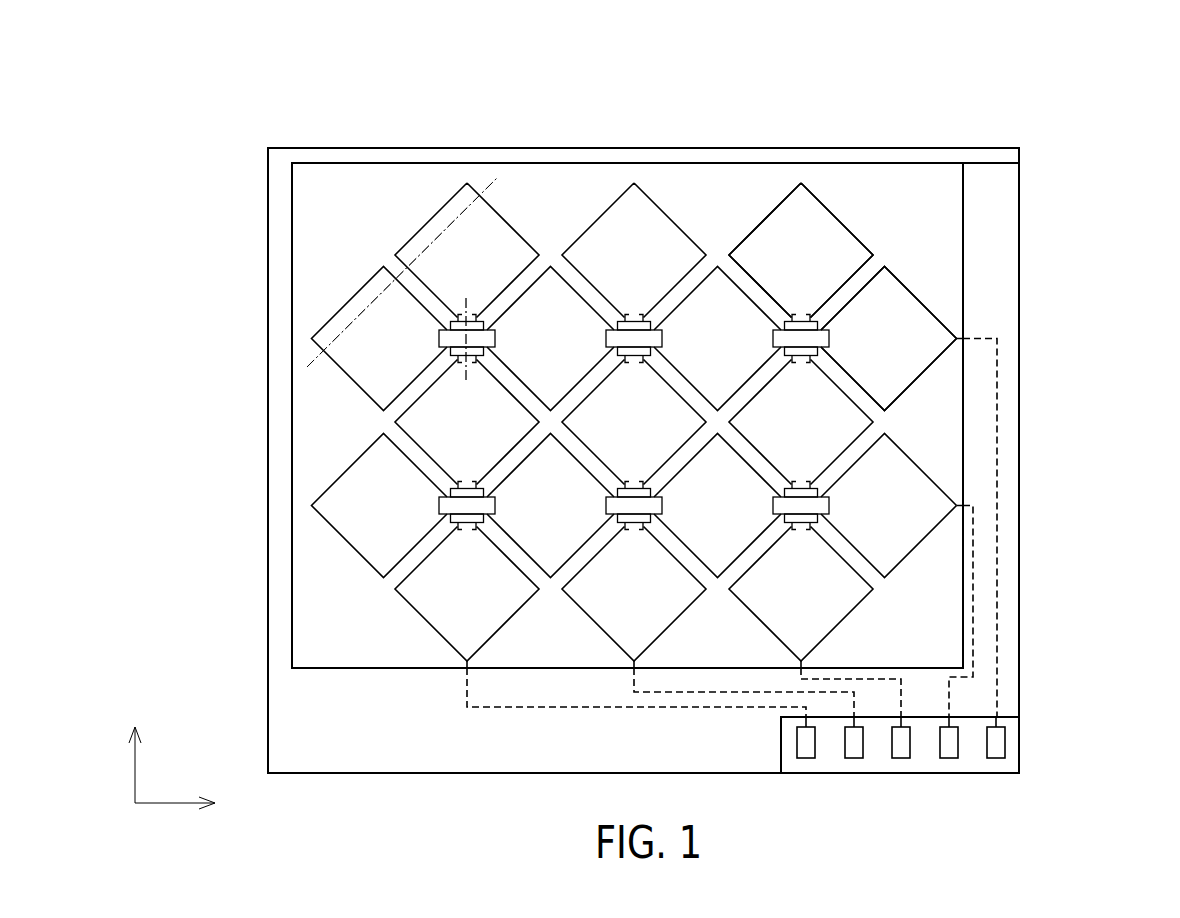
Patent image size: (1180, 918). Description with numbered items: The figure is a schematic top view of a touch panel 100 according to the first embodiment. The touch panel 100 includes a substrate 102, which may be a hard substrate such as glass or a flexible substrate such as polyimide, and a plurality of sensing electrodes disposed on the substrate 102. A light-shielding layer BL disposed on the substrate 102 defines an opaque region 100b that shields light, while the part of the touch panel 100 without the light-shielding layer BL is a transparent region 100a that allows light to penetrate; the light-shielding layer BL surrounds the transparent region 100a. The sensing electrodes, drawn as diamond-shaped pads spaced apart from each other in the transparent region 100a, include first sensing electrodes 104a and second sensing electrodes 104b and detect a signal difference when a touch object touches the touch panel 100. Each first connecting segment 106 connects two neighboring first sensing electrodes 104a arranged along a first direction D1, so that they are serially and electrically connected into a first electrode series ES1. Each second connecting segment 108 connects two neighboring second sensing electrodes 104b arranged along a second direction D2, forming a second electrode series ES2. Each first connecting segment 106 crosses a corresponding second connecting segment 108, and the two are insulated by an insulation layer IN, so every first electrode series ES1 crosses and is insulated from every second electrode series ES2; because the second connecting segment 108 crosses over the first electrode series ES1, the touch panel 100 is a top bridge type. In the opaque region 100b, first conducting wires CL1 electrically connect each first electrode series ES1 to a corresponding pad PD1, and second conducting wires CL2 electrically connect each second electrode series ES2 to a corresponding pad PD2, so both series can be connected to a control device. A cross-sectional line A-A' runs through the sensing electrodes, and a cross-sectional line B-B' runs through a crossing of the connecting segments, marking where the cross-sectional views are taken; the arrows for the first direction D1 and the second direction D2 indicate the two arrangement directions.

The touch panel 100 is at (1040, 98).
The transparent region 100a is at (944, 225).
The opaque region 100b is at (1004, 252).
The substrate 102 is at (352, 651).
The first sensing electrode 104a is at (837, 245).
The second sensing electrode 104b is at (917, 350).
The first connecting segment 106 is at (814, 321).
The second connecting segment 108 is at (818, 343).
The light-shielding layer BL is at (281, 197).
The insulation layer IN is at (448, 322).
The first electrode series ES1 is at (438, 199).
The second electrode series ES2 is at (303, 357).
The first conducting wire CL1 is at (1000, 552).
The second conducting wire CL2 is at (750, 708).
The pad PD1 is at (998, 750).
The pad PD2 is at (905, 746).
The cross-sectional line A-A' A is at (402, 297).
The cross-sectional line A- A' is at (431, 272).
The cross-sectional line B-B' B is at (503, 342).
The cross-sectional line B- B' is at (506, 335).
The first direction D1 is at (132, 748).
The second direction D2 is at (192, 800).